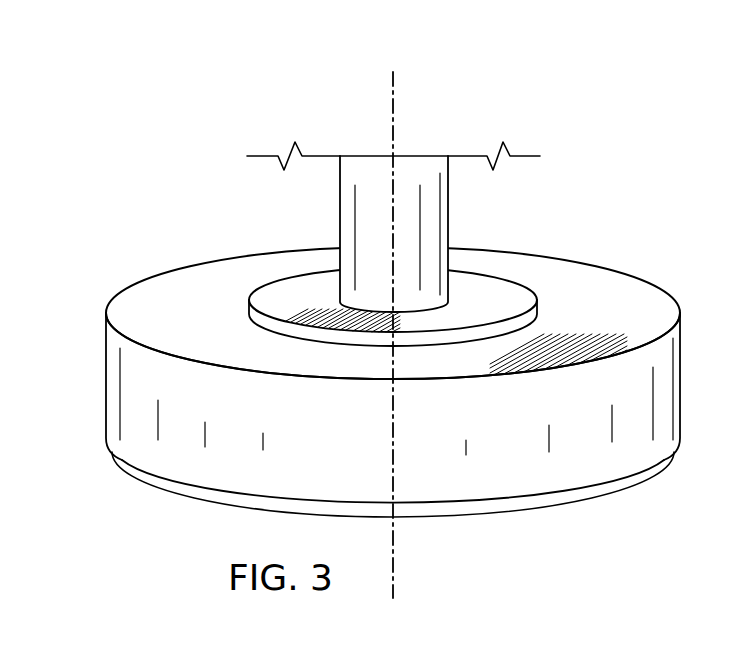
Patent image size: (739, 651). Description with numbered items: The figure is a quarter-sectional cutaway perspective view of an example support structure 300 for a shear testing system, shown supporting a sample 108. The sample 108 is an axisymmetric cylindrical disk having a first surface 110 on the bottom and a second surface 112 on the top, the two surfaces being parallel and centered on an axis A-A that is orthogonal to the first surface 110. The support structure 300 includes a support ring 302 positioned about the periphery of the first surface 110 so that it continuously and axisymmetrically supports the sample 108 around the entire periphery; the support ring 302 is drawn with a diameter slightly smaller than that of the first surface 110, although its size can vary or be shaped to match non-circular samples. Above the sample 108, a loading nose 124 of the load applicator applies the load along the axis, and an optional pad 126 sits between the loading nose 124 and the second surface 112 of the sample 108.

The support structure 300 is at (547, 117).
The sample 108 is at (106, 372).
The first surface 110 is at (674, 460).
The second surface 112 is at (218, 280).
The loading nose 124 is at (340, 213).
The pad 126 is at (537, 305).
The support ring 302 is at (183, 488).